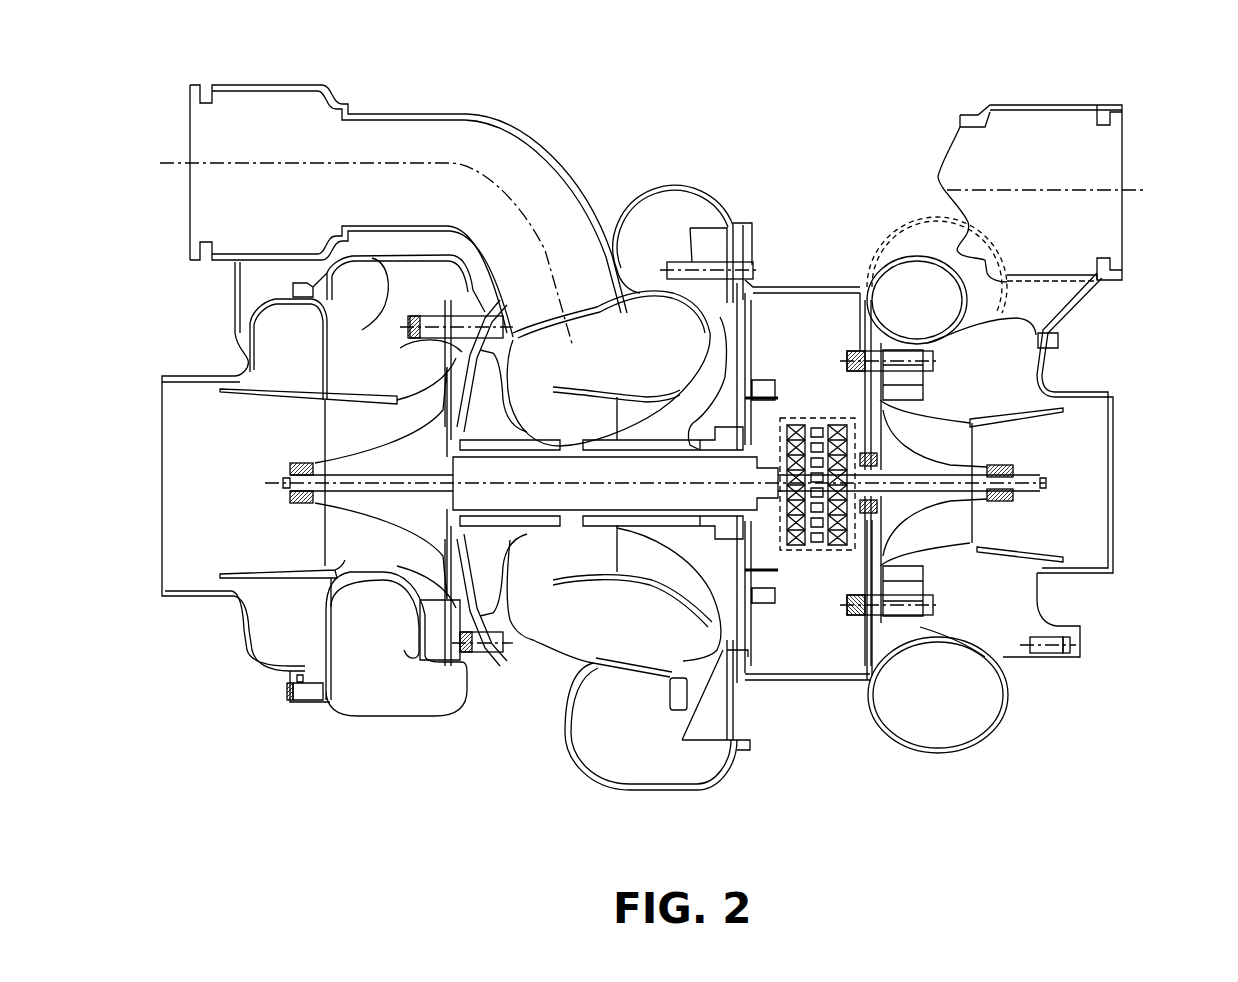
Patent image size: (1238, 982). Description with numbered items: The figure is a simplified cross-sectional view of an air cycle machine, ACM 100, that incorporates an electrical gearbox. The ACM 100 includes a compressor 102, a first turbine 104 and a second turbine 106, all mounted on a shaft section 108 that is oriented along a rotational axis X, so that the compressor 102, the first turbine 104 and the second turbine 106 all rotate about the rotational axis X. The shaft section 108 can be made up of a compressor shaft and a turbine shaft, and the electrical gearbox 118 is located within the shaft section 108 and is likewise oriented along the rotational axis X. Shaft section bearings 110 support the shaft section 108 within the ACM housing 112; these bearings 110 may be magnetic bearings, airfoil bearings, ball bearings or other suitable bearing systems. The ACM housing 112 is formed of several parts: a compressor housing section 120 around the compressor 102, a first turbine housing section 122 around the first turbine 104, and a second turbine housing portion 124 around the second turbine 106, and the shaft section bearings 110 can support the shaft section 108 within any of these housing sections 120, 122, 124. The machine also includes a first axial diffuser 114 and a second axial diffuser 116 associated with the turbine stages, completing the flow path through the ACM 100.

The ACM 100 is at (997, 75).
The compressor 102 is at (670, 395).
The first turbine 104 is at (950, 443).
The second turbine 106 is at (380, 430).
The shaft section 108 is at (633, 517).
The shaft section bearings 110 is at (533, 423).
The ACM housing 112 is at (740, 787).
The first axial diffuser 114 is at (1150, 387).
The second axial diffuser 116 is at (146, 371).
The electrical gearbox 118 is at (872, 508).
The compressor housing section 120 is at (660, 205).
The first turbine housing section 122 is at (827, 287).
The second turbine housing portion 124 is at (390, 287).
The rotational axis X is at (273, 473).